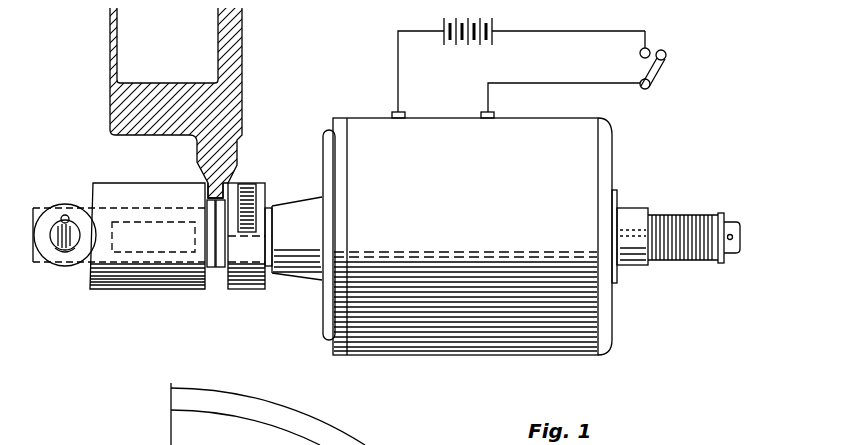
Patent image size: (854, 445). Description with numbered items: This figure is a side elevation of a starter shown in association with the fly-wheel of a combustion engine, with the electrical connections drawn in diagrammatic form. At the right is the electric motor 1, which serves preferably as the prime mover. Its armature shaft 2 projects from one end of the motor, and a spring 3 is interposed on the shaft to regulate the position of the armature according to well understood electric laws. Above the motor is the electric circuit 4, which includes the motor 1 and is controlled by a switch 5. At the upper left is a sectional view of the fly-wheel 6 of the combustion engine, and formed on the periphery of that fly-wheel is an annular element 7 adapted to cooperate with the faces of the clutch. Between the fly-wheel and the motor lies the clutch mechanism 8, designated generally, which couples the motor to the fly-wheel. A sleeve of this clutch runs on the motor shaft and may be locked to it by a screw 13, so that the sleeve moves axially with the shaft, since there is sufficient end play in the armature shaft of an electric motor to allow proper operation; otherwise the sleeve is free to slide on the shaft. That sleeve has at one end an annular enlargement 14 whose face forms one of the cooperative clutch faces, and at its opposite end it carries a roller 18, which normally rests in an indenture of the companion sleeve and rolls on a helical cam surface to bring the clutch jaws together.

The electric motor 1 is at (580, 165).
The armature shaft 2 is at (735, 220).
The spring 3 is at (683, 218).
The electric circuit 4 is at (563, 31).
The switch 5 is at (662, 66).
The fly-wheel 6 is at (240, 83).
The annular element 7 is at (207, 184).
The clutch mechanism 8 is at (137, 290).
The screw 13 is at (245, 183).
The annular enlargement 14 is at (237, 290).
The roller 18 is at (62, 265).